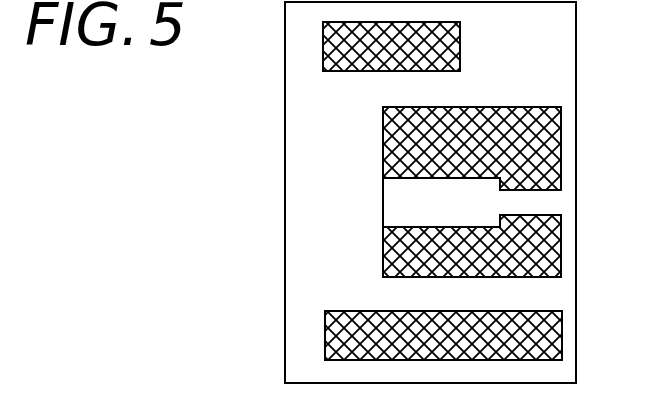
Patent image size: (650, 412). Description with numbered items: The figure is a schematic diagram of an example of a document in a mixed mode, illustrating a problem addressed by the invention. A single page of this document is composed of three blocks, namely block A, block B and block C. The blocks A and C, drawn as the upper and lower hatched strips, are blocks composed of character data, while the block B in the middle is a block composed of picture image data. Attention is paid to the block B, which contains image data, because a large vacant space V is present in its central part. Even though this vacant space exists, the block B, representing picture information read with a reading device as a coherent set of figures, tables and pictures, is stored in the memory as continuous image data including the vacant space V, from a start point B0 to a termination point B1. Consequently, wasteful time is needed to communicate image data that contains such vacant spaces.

The block A is at (352, 56).
The block B is at (402, 192).
The start point B0 is at (382, 178).
The termination point B1 is at (590, 231).
The block C is at (404, 337).
The vacant space V is at (448, 210).